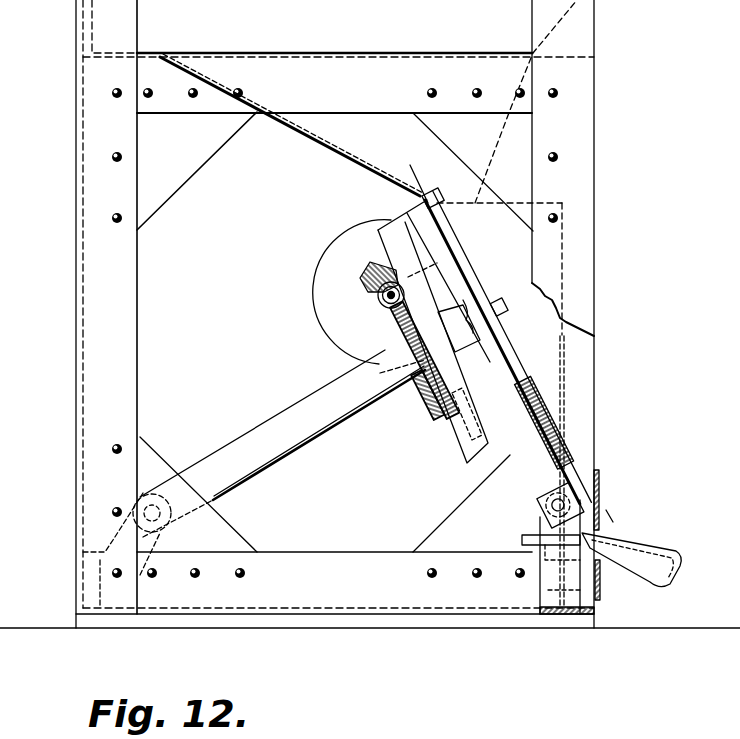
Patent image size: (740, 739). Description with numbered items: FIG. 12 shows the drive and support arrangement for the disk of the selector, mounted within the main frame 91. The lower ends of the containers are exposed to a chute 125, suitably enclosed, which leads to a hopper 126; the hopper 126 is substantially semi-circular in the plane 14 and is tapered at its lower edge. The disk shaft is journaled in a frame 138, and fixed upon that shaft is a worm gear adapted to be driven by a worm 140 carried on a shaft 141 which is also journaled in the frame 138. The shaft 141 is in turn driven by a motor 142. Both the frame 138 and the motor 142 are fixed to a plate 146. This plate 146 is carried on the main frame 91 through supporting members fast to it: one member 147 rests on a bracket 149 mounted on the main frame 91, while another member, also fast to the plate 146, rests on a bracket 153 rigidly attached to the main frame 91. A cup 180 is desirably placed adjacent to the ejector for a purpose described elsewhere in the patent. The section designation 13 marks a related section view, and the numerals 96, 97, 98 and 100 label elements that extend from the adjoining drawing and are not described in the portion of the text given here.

The section line 13 is at (397, 205).
The plane 14— 14 is at (428, 161).
The main frame 91 is at (135, 251).
The element 96 is at (356, 7).
The element 97 is at (323, 7).
The element 98 is at (406, 6).
The element 100 is at (265, 6).
The chute 125 is at (302, 133).
The hopper 126 is at (565, 366).
The frame 138 is at (485, 445).
The worm 140 is at (368, 282).
The shaft 141 is at (378, 301).
The motor 142 is at (335, 262).
The plate 146 is at (440, 243).
The member 147 is at (257, 434).
The bracket 149 is at (92, 551).
The bracket 153 is at (546, 612).
The cup 180 is at (632, 556).